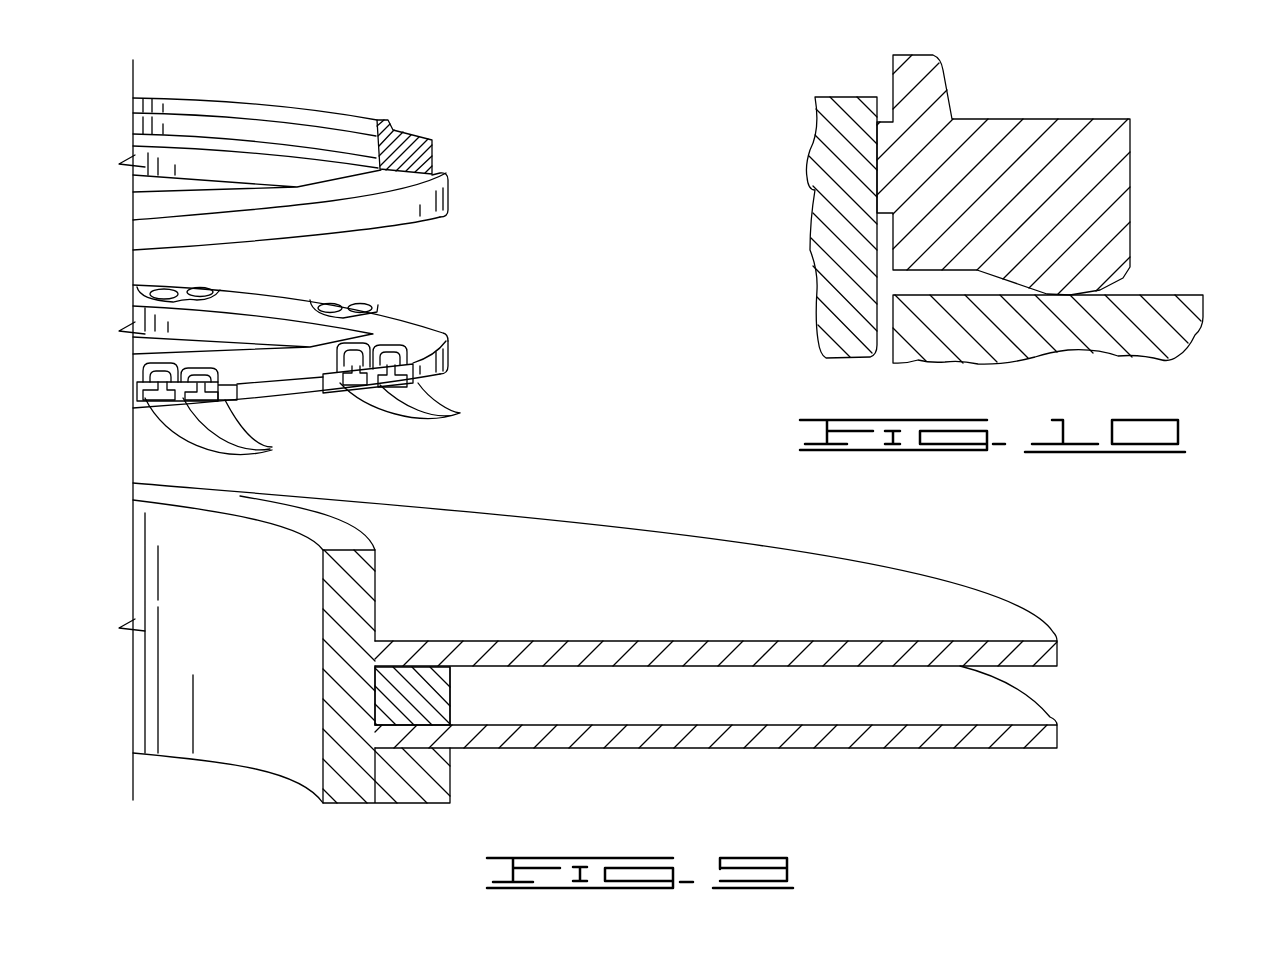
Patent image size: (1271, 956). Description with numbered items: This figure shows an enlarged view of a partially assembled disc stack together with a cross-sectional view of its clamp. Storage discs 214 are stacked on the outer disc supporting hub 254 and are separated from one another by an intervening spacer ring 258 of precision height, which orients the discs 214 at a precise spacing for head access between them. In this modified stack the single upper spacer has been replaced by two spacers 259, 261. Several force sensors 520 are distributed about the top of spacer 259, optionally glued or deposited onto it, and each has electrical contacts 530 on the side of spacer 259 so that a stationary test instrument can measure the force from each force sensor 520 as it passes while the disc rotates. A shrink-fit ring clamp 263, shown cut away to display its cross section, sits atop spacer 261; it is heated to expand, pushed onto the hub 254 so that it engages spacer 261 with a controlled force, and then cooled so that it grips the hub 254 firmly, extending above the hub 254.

In FIG. 9, the storage disc 214 is at (645, 553).
In FIG. 9, the outer disc supporting hub 254 is at (263, 745).
In FIG. 10, the outer disc supporting hub 254 is at (825, 177).
In FIG. 9, the spacer ring 258 is at (428, 703).
In FIG. 9, the spacer 259 is at (455, 342).
In FIG. 9, the spacer 261 is at (451, 196).
In FIG. 10, the spacer 261 is at (1140, 313).
In FIG. 9, the shrink-fit ring clamp 263 is at (353, 118).
In FIG. 10, the shrink-fit ring clamp 263 is at (1030, 137).
In FIG. 9, the force sensor 520 is at (185, 292).
In FIG. 9, the electrical contact 530 is at (324, 423).